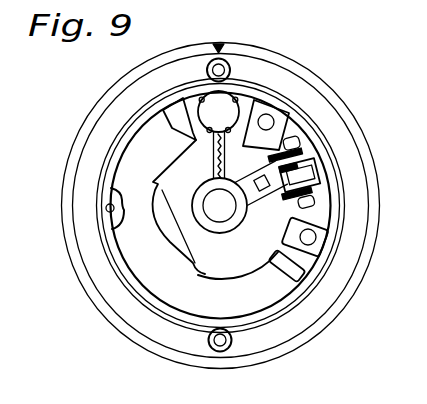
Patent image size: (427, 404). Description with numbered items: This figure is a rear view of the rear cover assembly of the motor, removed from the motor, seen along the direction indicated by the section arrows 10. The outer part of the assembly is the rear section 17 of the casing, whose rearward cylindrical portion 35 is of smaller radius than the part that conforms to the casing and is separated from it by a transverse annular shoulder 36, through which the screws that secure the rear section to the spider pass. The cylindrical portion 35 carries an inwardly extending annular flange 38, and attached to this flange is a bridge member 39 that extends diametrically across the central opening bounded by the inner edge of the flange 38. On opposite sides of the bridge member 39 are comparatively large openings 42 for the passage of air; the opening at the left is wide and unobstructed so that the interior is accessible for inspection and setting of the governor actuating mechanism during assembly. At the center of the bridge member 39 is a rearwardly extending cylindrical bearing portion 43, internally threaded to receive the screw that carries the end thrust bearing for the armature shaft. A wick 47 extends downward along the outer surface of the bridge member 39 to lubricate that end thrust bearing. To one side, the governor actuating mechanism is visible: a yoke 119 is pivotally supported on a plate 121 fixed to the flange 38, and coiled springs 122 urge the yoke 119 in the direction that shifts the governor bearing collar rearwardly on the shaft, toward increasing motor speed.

The section line 10 is at (50, 257).
The rear section 17 is at (280, 50).
The cylindrical portion 35 is at (278, 89).
The transverse annular shoulder 36 is at (318, 309).
The inwardly extending flange 38 is at (143, 265).
The bridge member 39 is at (222, 253).
The openings 42 is at (167, 224).
The cylindrical bearing portion 43 is at (233, 229).
The wick 47 is at (192, 152).
The yoke 119 is at (305, 158).
The plate 121 is at (326, 192).
The coiled springs 122 is at (285, 152).